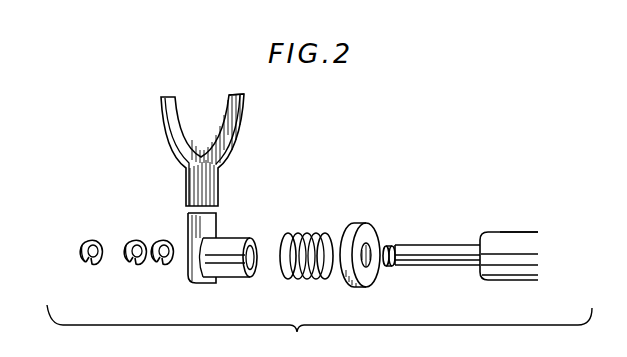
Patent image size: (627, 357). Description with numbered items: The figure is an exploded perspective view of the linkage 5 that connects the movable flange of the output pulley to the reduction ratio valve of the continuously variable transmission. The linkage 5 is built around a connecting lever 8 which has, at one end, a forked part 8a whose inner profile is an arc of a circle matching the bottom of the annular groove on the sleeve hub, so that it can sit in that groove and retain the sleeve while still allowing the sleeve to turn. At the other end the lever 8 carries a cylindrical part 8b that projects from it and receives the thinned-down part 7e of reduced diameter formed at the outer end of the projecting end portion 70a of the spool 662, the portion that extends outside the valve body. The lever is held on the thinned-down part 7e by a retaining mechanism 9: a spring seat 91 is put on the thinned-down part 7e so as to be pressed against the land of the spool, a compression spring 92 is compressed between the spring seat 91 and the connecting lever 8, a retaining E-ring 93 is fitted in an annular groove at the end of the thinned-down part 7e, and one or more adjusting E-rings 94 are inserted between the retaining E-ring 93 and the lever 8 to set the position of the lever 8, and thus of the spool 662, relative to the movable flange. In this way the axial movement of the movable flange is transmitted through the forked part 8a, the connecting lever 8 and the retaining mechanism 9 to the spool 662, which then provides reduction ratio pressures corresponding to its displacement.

The connecting lever 8 is at (218, 176).
The forked part 8a is at (244, 112).
The cylindrical part 8b is at (240, 278).
The linkage 5 is at (283, 208).
The retaining mechanism 9 is at (318, 224).
The compression spring 92 is at (314, 280).
The spring seat 91 is at (373, 282).
The retaining E-ring 93 is at (91, 240).
The adjusting E-rings 94 is at (165, 240).
The thinned-down part 7e is at (443, 265).
The projecting end portion of the spool 70a is at (504, 277).
The spool 662 is at (487, 232).